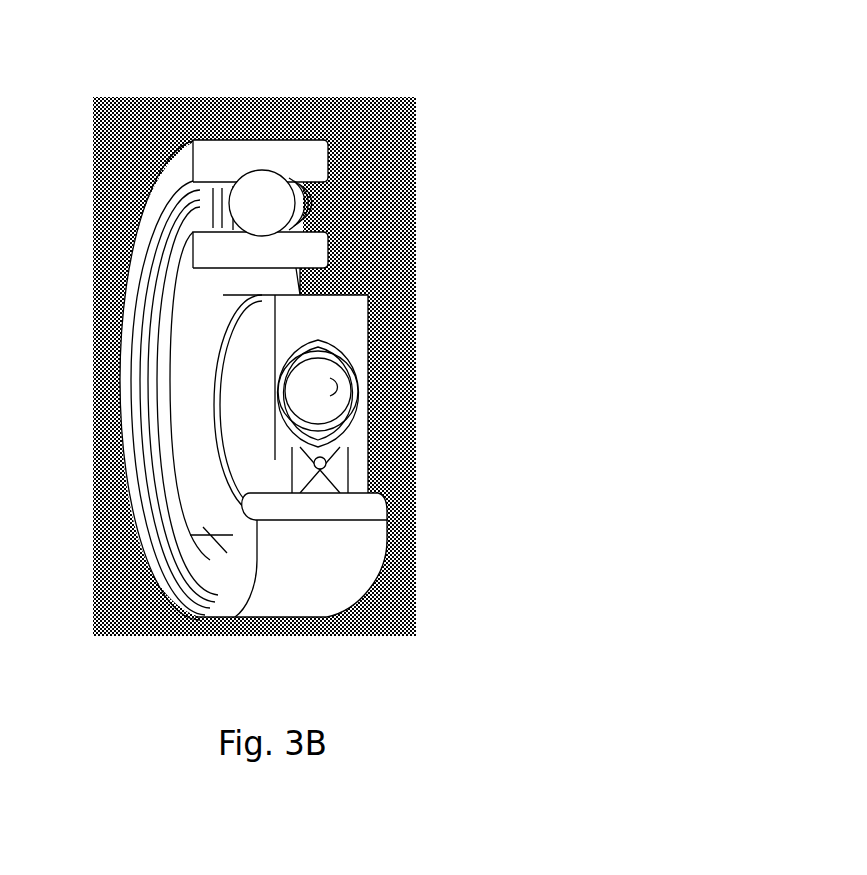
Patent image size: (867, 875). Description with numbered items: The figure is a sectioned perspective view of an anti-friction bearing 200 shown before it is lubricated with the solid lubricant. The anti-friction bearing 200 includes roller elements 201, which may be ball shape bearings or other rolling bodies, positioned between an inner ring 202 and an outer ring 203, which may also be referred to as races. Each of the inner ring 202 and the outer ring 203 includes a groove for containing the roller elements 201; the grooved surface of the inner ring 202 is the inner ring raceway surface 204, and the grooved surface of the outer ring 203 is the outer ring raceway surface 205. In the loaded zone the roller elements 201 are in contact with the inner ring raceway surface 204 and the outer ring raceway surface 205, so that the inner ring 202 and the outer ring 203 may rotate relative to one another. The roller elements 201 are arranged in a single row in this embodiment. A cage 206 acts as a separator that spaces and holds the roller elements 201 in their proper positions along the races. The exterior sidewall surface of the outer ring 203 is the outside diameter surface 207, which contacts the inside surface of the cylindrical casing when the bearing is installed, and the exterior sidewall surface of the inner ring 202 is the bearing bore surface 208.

The anti-friction bearing 200 is at (350, 106).
The roller elements 201 is at (330, 386).
The inner ring 202 is at (325, 246).
The outer ring 203 is at (322, 152).
The inner ring raceway surface 204 is at (315, 320).
The outer ring raceway surface 205 is at (335, 512).
The cage 206 is at (335, 461).
The outside diameter surface 207 is at (255, 122).
The bearing bore surface 208 is at (178, 426).